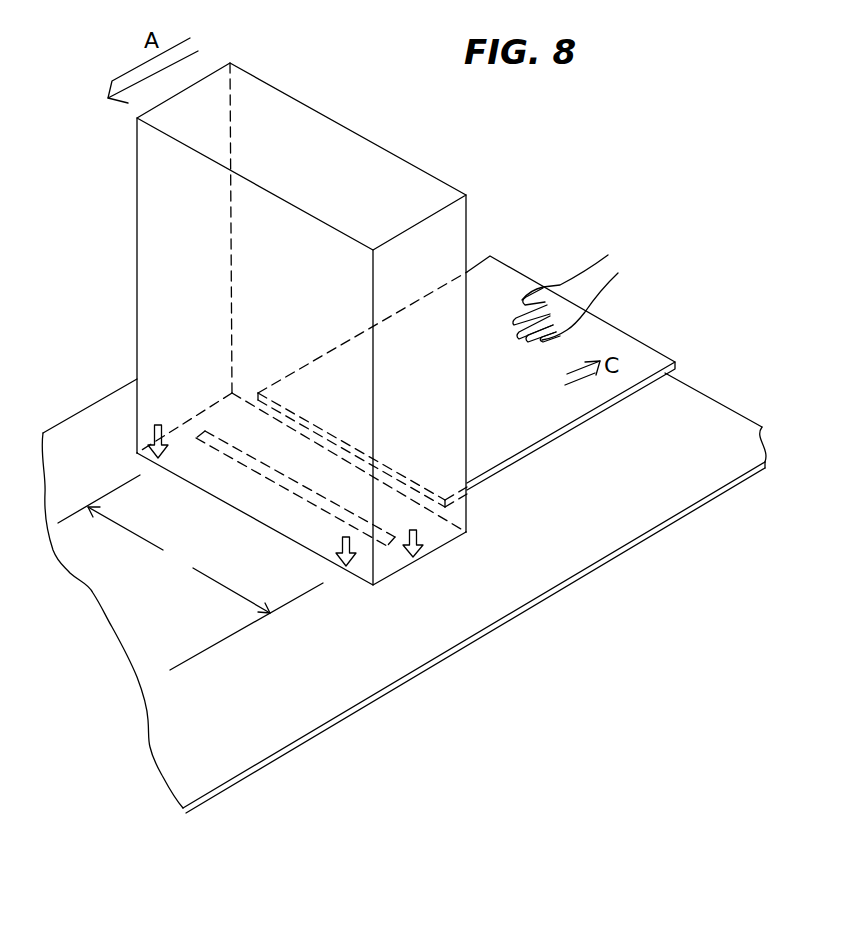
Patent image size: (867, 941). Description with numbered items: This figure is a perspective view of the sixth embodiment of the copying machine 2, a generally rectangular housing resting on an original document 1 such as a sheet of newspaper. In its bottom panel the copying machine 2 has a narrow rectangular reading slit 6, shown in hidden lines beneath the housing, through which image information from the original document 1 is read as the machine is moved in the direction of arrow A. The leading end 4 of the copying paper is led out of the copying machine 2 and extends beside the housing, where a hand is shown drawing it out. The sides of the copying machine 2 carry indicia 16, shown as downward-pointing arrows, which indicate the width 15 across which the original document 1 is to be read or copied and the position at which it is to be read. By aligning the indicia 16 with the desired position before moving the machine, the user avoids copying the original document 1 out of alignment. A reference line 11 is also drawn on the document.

The original document 1 is at (570, 563).
The copying machine 2 is at (357, 160).
The leading end 4 is at (508, 290).
The reading slit 6 is at (295, 492).
The groove 11 is at (190, 595).
The width 15 is at (179, 560).
The indicia 16 is at (155, 437).